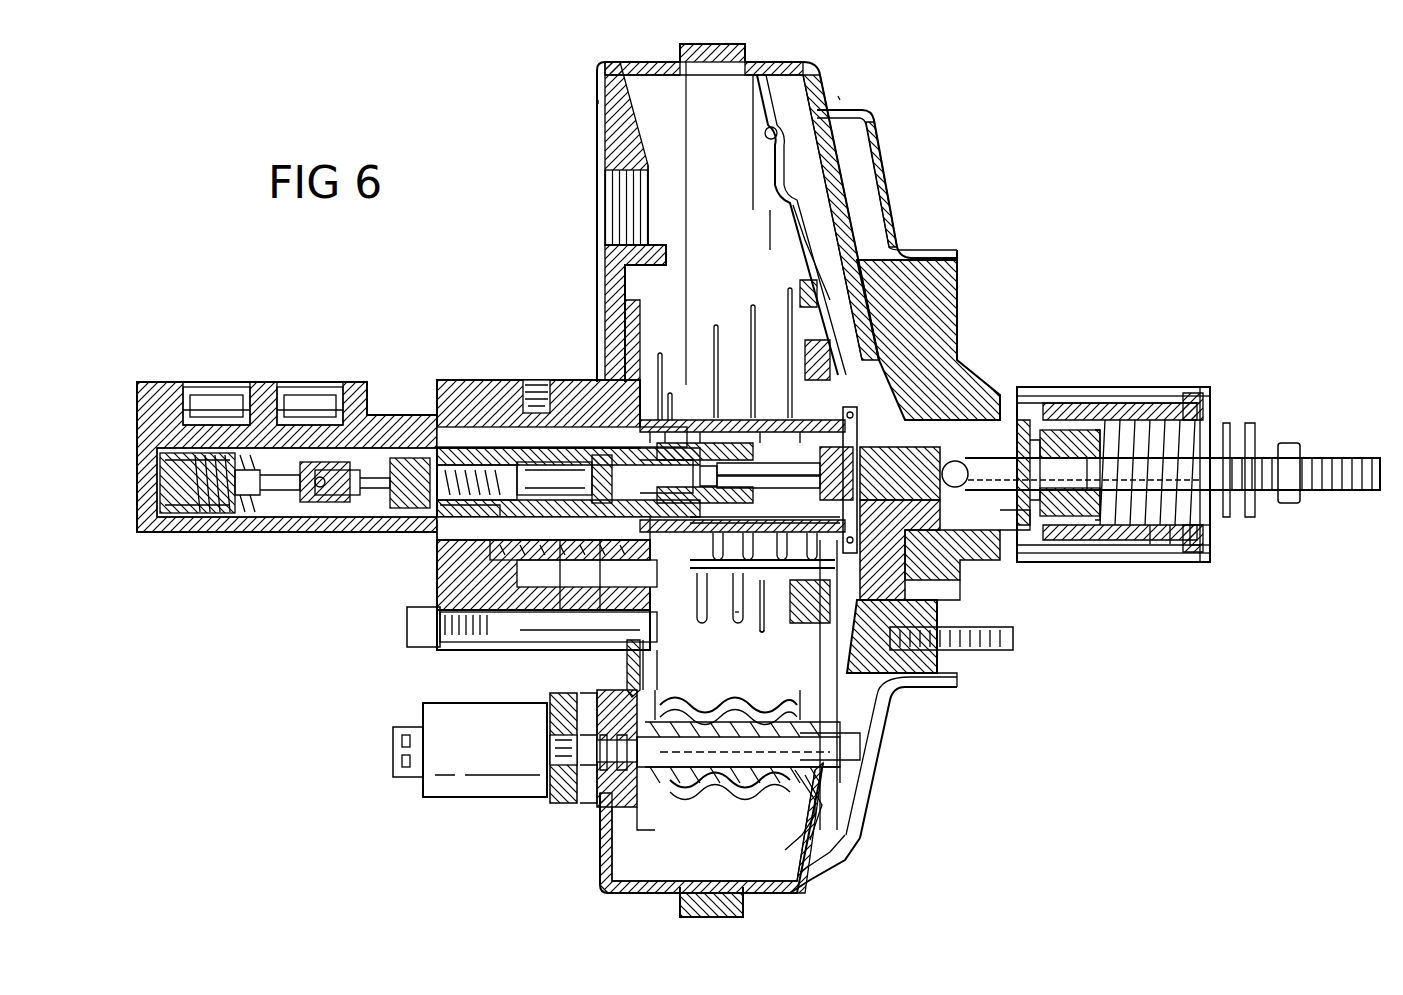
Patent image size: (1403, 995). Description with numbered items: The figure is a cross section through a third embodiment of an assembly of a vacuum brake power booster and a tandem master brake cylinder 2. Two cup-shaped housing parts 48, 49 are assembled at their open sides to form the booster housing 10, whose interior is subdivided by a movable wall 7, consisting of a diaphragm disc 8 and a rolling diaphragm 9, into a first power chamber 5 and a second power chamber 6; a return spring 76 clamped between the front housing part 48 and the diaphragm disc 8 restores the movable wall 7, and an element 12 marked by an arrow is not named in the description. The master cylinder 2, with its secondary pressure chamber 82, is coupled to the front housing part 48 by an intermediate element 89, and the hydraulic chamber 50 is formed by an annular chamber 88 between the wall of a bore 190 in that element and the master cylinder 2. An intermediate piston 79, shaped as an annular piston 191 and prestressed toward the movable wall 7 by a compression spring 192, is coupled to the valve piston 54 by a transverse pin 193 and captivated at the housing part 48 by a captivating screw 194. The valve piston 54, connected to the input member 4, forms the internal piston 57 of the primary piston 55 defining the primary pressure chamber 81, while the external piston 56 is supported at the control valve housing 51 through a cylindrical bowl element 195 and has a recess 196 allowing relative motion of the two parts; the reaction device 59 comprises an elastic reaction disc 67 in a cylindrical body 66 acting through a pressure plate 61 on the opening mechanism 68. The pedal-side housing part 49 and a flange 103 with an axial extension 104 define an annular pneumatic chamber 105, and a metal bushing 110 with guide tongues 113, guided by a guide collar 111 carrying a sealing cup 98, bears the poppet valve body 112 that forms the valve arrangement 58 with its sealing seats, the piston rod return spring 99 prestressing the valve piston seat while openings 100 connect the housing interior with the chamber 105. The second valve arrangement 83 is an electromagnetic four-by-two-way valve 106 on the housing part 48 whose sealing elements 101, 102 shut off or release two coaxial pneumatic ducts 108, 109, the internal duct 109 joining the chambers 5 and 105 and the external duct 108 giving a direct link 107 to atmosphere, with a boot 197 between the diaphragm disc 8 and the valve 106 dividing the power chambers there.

The tandem master brake cylinder 2 is at (158, 378).
The input member 4 is at (1222, 460).
The first power chamber 5 is at (648, 128).
The second power chamber 6 is at (808, 162).
The movable wall 7 is at (755, 128).
The diaphragm disc 8 is at (790, 208).
The rolling diaphragm 9 is at (705, 80).
The booster housing 10 is at (850, 96).
The vacuum chamber 12 is at (590, 100).
The front housing part 48 is at (603, 66).
The brake pedal-side housing part 49 is at (815, 62).
The hydraulic chamber 50 is at (562, 425).
The control valve housing 51 is at (1070, 420).
The valve piston 54 is at (958, 595).
The primary piston 55 is at (648, 425).
The external piston 56 is at (668, 440).
The internal piston 57 is at (680, 600).
The valve arrangement 58 is at (1012, 540).
The reaction device 59 is at (594, 440).
The pressure plate 61 is at (598, 500).
The cylindrical body 66 is at (652, 500).
The elastic reaction disc 67 is at (618, 500).
The opening mechanism 68 is at (440, 522).
The return spring 76 is at (742, 632).
The intermediate piston 79 is at (750, 412).
The primary pressure chamber 81 is at (490, 465).
The secondary pressure chamber 82 is at (265, 462).
The second valve arrangement 83 is at (420, 798).
The annular chamber 88 is at (490, 538).
The intermediate element 89 is at (538, 420).
The sealing cup 98 is at (1192, 548).
The piston rod return spring 99 is at (1196, 418).
The openings 100 is at (1132, 420).
The sealing element 101 is at (588, 800).
The sealing element 102 is at (620, 810).
The flange 103 is at (893, 735).
The axial extension 104 is at (1045, 548).
The annular pneumatic chamber 105 is at (852, 783).
The 4/2-way valve 106 is at (488, 780).
The direct link 107 is at (598, 890).
The pneumatic duct 108 is at (738, 799).
The pneumatic duct 109 is at (722, 752).
The metal bushing 110 is at (1100, 548).
The guide collar 111 is at (1150, 548).
The poppet valve body 112 is at (1020, 425).
The guide tongues 113 is at (1050, 425).
The bore 190 is at (545, 610).
The annular piston 191 is at (790, 418).
The compression spring 192 is at (735, 418).
The transverse pin 193 is at (858, 340).
The captivating screw 194 is at (737, 612).
The cylindrical bowl element 195 is at (890, 380).
The recess 196 is at (771, 616).
The boot 197 is at (795, 830).